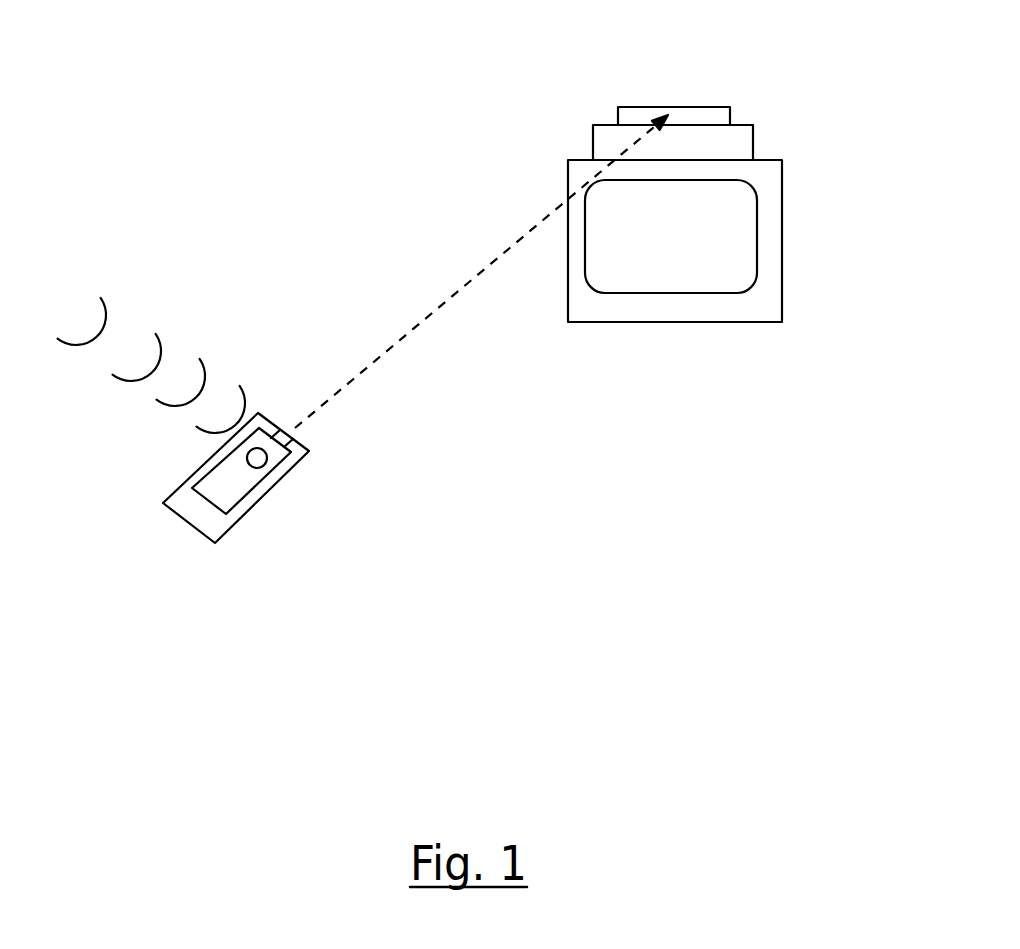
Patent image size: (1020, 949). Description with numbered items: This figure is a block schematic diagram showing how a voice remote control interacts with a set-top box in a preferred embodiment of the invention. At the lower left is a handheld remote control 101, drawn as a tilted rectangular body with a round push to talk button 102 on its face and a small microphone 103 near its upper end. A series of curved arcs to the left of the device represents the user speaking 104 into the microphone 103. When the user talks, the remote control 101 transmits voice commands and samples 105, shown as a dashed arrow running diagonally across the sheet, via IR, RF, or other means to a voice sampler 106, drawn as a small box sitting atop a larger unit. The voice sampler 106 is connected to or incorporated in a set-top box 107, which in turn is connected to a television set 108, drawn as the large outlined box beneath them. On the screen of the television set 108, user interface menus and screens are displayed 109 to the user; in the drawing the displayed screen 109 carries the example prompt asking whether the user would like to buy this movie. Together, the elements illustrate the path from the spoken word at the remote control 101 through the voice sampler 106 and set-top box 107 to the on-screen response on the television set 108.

The remote control 101 is at (238, 533).
The push to talk button 102 is at (262, 465).
The microphone 103 is at (290, 437).
The user speaking 104 is at (148, 327).
The voice commands and samples 105 is at (420, 305).
The voice sampler 106 is at (642, 107).
The set-top box 107 is at (767, 138).
The television set 108 is at (788, 263).
The displayed user interface menus and screens 109 is at (657, 276).